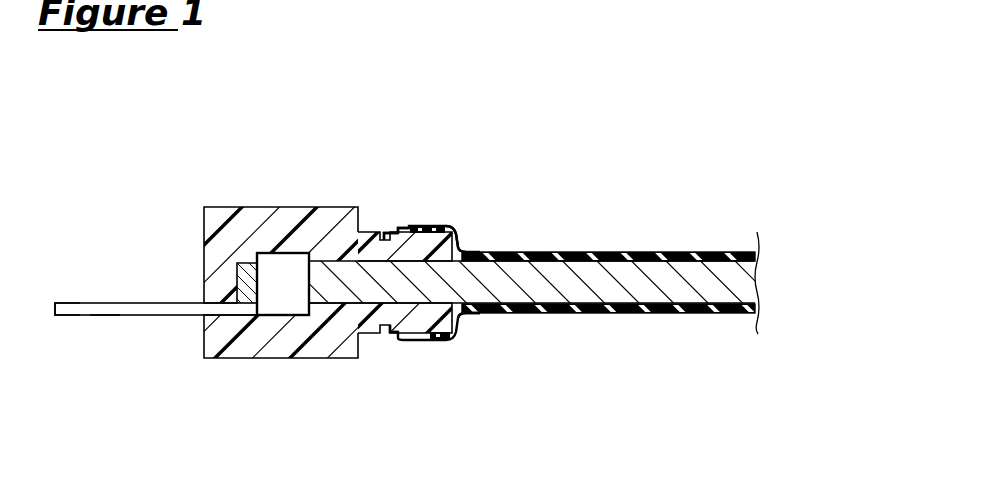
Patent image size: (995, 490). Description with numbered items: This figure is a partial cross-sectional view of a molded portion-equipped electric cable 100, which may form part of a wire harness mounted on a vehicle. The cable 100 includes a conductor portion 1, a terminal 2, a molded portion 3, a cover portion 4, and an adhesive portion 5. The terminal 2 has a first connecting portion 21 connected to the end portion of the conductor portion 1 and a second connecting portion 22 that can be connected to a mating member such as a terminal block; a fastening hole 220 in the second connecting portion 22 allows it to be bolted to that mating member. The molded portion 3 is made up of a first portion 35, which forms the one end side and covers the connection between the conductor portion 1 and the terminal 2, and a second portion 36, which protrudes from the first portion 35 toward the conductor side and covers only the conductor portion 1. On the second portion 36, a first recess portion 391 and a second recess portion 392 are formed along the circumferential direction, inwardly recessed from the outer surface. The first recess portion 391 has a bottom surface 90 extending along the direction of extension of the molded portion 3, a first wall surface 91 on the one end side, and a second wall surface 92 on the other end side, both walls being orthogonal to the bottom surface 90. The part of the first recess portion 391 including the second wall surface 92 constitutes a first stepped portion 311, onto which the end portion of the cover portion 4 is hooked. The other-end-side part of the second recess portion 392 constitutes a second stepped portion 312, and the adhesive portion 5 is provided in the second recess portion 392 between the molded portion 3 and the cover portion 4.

The molded portion-equipped electric cable 100 is at (726, 105).
The conductor portion 1 is at (725, 292).
The terminal 2 is at (155, 309).
The second connecting portion 22 is at (65, 303).
The fastening hole 220 is at (103, 316).
The molded portion 3 is at (291, 299).
The first portion 35 is at (261, 382).
The second portion 36 is at (376, 382).
The first connecting portion 21 is at (270, 258).
The cover portion 4 is at (670, 252).
The adhesive portion 5 is at (482, 312).
The bottom surface 90 is at (441, 282).
The first wall surface 91 is at (385, 233).
The second wall surface 92 is at (405, 229).
The first stepped portion 311 is at (420, 227).
The second stepped portion 312 is at (455, 228).
The first recess portion 391 is at (392, 330).
The second recess portion 392 is at (437, 338).